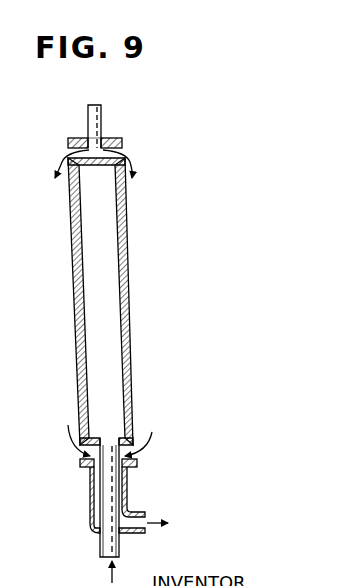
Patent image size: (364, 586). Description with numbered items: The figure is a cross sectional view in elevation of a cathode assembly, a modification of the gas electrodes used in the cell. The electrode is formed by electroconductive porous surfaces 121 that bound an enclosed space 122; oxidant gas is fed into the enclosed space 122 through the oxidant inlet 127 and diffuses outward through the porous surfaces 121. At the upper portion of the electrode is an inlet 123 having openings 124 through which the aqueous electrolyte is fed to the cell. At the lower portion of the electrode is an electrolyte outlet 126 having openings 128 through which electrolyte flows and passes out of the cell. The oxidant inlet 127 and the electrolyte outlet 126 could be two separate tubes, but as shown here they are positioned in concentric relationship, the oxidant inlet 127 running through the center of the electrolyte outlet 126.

The electroconductive porous surfaces 121 is at (118, 233).
The enclosed space 122 is at (108, 280).
The inlet 123 is at (103, 108).
The openings 124 is at (121, 149).
The electrolyte outlet 126 is at (92, 490).
The oxidant inlet 127 is at (105, 545).
The openings 128 is at (78, 460).